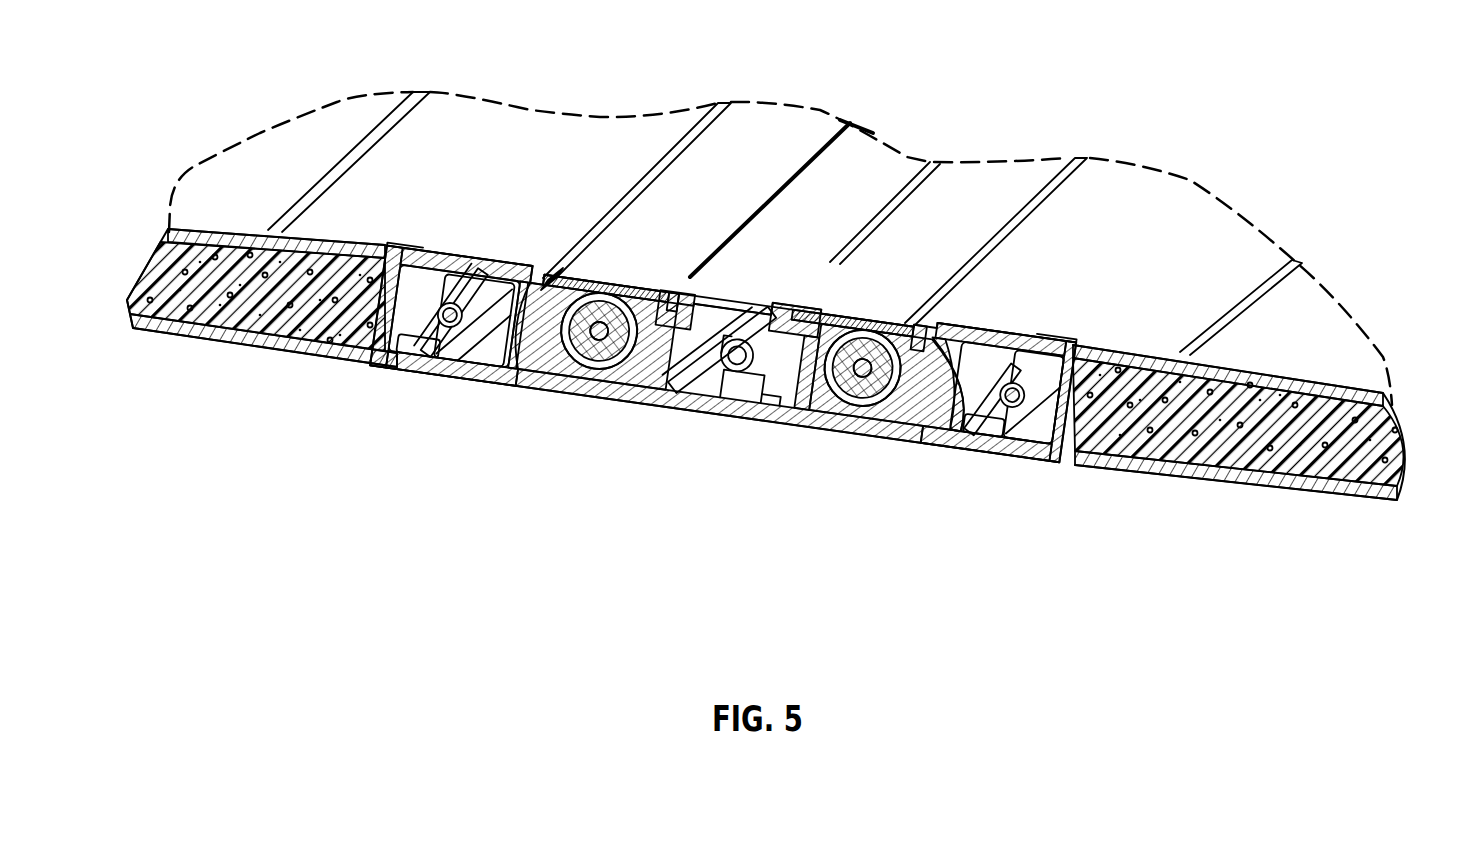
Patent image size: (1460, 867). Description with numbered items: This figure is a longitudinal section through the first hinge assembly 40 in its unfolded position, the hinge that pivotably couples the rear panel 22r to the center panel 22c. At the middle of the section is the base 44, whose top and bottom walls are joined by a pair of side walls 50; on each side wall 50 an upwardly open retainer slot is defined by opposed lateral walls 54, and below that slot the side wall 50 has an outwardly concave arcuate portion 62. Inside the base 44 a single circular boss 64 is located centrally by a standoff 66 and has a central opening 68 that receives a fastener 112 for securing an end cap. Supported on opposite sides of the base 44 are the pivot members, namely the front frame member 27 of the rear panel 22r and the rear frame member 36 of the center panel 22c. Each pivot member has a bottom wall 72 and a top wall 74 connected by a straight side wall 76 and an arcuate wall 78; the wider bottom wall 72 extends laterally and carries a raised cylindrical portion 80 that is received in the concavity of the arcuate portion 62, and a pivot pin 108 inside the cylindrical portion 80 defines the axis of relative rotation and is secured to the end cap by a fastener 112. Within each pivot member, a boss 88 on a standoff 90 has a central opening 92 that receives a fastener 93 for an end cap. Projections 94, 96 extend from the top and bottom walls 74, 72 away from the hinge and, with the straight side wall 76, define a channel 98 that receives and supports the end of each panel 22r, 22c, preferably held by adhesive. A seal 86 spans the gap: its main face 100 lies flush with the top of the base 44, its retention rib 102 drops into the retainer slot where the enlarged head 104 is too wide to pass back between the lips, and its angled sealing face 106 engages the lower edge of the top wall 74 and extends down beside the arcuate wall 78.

The center panel 22c is at (306, 125).
The rear panel 22r is at (1309, 350).
The front frame member 27 is at (1190, 215).
The rear frame member 36 is at (541, 157).
The first hinge assembly 40 is at (1013, 63).
The base 44 is at (849, 163).
The side walls 50 is at (672, 405).
The lateral walls 54 is at (707, 262).
The arcuate portion 62 is at (790, 412).
The boss 64 is at (664, 374).
The standoff 66 is at (705, 398).
The central opening 68 is at (720, 330).
The bottom wall 72 is at (440, 372).
The top wall 74 is at (426, 262).
The straight side wall 76 is at (403, 370).
The arcuate wall 78 is at (462, 290).
The cylindrical portion 80 is at (505, 378).
The seal 86 is at (612, 280).
The boss 88 is at (408, 262).
The standoff 90 is at (470, 370).
The central opening 92 is at (421, 375).
The fastener 93 is at (436, 300).
The projection 94 is at (270, 230).
The projection 96 is at (268, 350).
The channel 98 is at (348, 262).
The main face 100 is at (640, 285).
The retention rib 102 is at (683, 290).
The enlarged head 104 is at (745, 413).
The sealing face 106 is at (548, 275).
The pivot pin 108 is at (562, 360).
The fastener 112 is at (585, 358).